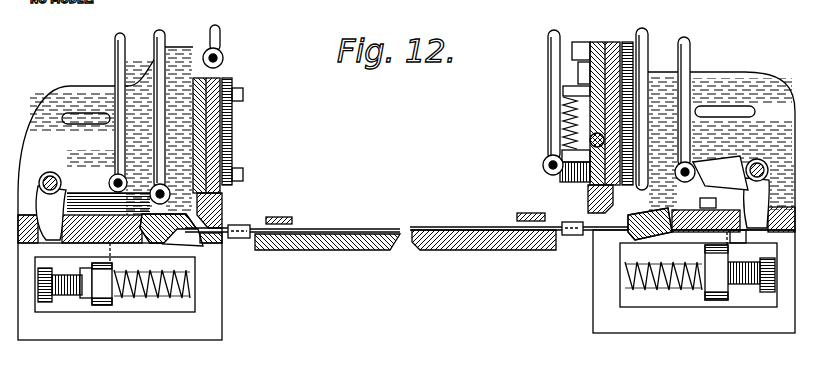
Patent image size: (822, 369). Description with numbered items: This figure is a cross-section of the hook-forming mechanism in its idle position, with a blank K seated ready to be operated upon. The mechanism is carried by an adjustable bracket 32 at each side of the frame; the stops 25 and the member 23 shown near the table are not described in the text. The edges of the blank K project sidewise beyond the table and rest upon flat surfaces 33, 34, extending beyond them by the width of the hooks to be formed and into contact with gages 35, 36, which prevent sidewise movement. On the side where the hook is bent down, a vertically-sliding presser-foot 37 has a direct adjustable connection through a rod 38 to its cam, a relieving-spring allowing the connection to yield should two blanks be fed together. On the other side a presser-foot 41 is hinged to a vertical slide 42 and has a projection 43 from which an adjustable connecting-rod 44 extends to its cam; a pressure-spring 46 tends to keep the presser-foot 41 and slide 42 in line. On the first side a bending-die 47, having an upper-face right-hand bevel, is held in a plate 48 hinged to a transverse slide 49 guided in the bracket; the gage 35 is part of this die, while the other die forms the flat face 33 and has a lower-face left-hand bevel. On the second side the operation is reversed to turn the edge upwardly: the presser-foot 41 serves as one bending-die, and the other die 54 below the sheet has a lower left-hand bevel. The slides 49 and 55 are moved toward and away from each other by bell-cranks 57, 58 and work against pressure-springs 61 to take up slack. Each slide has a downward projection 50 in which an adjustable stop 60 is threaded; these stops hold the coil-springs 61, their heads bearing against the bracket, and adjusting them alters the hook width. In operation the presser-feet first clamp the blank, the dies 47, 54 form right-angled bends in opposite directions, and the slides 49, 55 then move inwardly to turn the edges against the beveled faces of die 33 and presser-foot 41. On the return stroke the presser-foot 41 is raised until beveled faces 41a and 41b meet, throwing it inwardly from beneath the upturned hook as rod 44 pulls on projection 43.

The adjustable bracket 32 is at (406, 193).
The rod 38 is at (211, 42).
The plate 48 is at (137, 178).
The bell-crank 57 is at (72, 170).
The bending-die 47 is at (186, 195).
The presser-foot 37 is at (221, 213).
The stop 25 is at (290, 217).
The blank K is at (352, 231).
The flat surface 33 is at (221, 244).
The gage 35 is at (233, 240).
The plate 23 is at (438, 251).
The flat surface 34 is at (593, 233).
The gage 36 is at (616, 234).
The adjustable stop 60 is at (47, 300).
The transverse slide 49 is at (76, 240).
The downward projection 50 is at (100, 306).
The pressure-spring 61 is at (166, 300).
The vertical slide 42 is at (600, 46).
The adjustable connecting-rod 44 is at (548, 110).
The pressure-spring 46 is at (565, 136).
The projection 43 is at (590, 183).
The beveled face 41a is at (545, 165).
The presser-foot 41 is at (590, 198).
The beveled face 41b is at (605, 165).
The bell-crank 58 is at (735, 163).
The bending-die 54 is at (627, 243).
The slide 55 is at (738, 236).